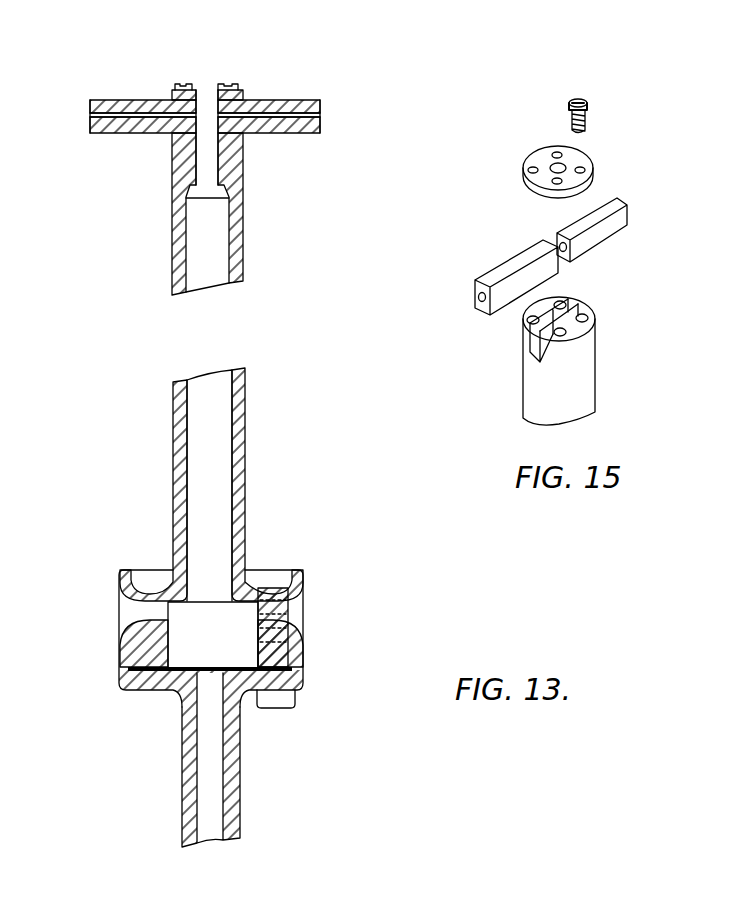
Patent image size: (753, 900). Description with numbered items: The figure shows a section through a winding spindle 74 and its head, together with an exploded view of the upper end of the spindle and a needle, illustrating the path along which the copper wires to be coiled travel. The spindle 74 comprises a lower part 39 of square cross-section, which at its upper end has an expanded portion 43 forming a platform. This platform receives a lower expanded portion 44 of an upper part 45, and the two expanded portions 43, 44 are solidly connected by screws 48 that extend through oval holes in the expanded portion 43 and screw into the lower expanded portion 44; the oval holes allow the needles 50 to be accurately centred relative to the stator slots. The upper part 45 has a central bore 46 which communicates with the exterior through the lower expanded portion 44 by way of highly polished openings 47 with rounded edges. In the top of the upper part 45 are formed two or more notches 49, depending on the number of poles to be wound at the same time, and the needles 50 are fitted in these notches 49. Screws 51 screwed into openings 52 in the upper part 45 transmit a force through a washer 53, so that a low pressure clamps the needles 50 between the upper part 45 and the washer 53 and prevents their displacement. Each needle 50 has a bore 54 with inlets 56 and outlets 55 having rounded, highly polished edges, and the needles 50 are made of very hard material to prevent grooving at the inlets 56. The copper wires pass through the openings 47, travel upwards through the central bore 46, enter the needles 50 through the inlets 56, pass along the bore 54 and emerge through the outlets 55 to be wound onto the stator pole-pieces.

In FIG. 13, the lower part 39 is at (233, 780).
In FIG. 13, the expanded portion 43 is at (158, 683).
In FIG. 13, the lower expanded portion 44 is at (143, 650).
In FIG. 13, the upper part 45 is at (247, 458).
In FIG. 15, the upper part 45 is at (588, 405).
In FIG. 13, the central bore 46 is at (225, 513).
In FIG. 13, the openings 47 is at (135, 608).
In FIG. 13, the screws 48 is at (277, 702).
In FIG. 15, the notches 49 is at (575, 307).
In FIG. 13, the needles 50 is at (303, 103).
In FIG. 15, the needles 50 is at (622, 222).
In FIG. 13, the screws 51 is at (178, 83).
In FIG. 15, the screws 51 is at (587, 123).
In FIG. 15, the openings 52 is at (568, 297).
In FIG. 13, the washer 53 is at (238, 92).
In FIG. 15, the washer 53 is at (593, 178).
In FIG. 13, the bore 54 is at (120, 115).
In FIG. 13, the outlets 55 is at (90, 123).
In FIG. 13, the inlets 56 is at (197, 110).
In FIG. 13, the winding spindle 74 is at (296, 549).